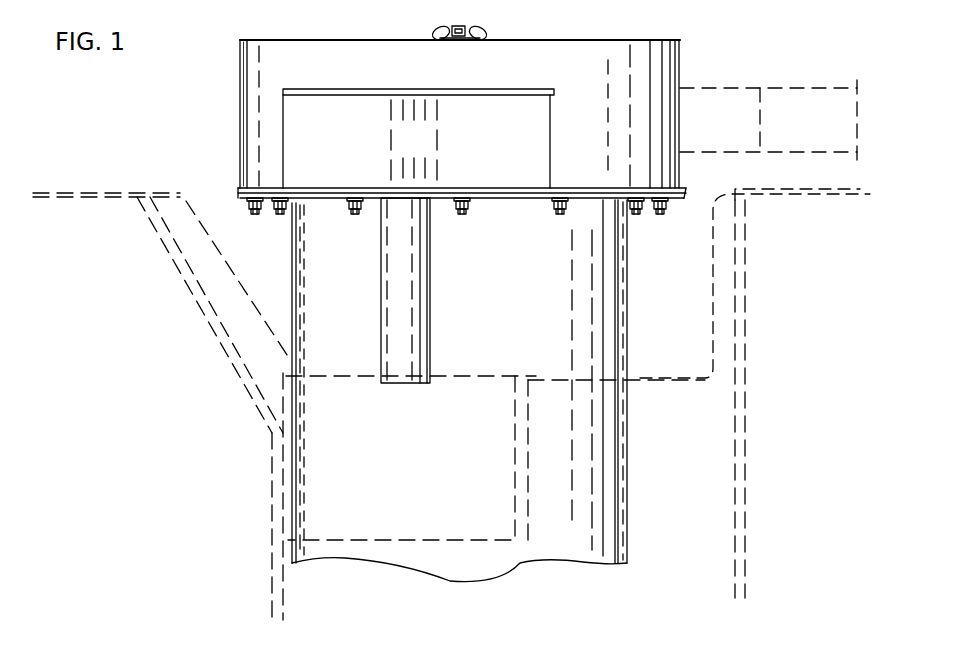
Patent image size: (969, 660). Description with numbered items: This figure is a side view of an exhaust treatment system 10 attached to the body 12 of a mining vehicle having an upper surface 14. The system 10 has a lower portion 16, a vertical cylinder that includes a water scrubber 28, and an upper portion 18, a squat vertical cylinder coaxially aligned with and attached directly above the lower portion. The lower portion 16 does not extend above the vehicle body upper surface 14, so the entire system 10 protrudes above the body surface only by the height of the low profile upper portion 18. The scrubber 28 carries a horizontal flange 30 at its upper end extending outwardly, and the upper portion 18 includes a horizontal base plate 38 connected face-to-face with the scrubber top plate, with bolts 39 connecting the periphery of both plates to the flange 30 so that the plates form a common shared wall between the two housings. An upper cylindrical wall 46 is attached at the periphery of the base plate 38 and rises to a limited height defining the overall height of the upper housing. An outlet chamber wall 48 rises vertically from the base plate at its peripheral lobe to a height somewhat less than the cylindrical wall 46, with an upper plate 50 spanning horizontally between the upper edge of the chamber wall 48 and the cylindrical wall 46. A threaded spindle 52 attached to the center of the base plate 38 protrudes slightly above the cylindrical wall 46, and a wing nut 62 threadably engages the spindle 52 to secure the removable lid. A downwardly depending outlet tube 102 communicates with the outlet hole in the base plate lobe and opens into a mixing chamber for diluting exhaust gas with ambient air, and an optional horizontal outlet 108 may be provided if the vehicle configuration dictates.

The exhaust treatment system 10 is at (226, 34).
The body 12 is at (136, 184).
The upper surface 14 is at (86, 190).
The lower portion 16 is at (641, 515).
The upper portion 18 is at (233, 187).
The water scrubber 28 is at (627, 521).
The horizontal flange 30 is at (680, 198).
The base plate 38 is at (678, 190).
The bolts 39 is at (556, 207).
The upper cylindrical wall 46 is at (238, 107).
The outlet chamber wall 48 is at (434, 152).
The upper plate 50 is at (458, 89).
The threaded spindle 52 is at (453, 26).
The wing nut 62 is at (486, 26).
The outlet tube 102 is at (430, 262).
The horizontal outlet 108 is at (791, 88).